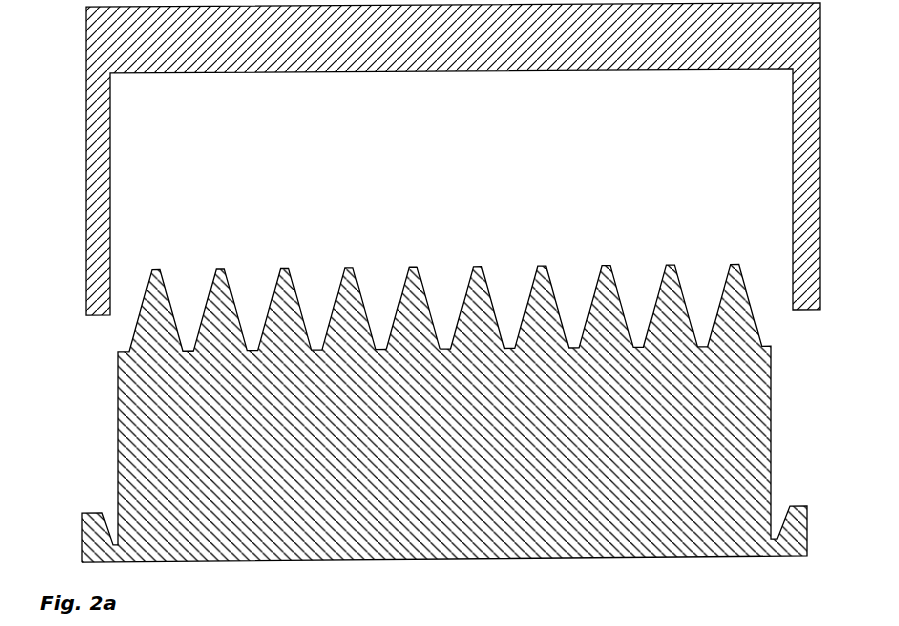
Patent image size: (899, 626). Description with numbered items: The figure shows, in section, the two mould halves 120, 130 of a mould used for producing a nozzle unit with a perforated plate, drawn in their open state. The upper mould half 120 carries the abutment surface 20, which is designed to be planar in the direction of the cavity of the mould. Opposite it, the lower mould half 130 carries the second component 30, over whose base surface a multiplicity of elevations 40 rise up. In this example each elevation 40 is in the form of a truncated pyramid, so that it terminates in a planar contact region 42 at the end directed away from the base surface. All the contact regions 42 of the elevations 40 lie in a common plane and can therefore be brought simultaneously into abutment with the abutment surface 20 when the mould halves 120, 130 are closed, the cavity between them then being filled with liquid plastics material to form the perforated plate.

The abutment surface 20 is at (390, 71).
The second component 30 is at (193, 348).
The elevations 40 is at (425, 308).
The contact region 42 is at (411, 267).
The mould half 120 is at (427, 208).
The mould half 130 is at (444, 417).